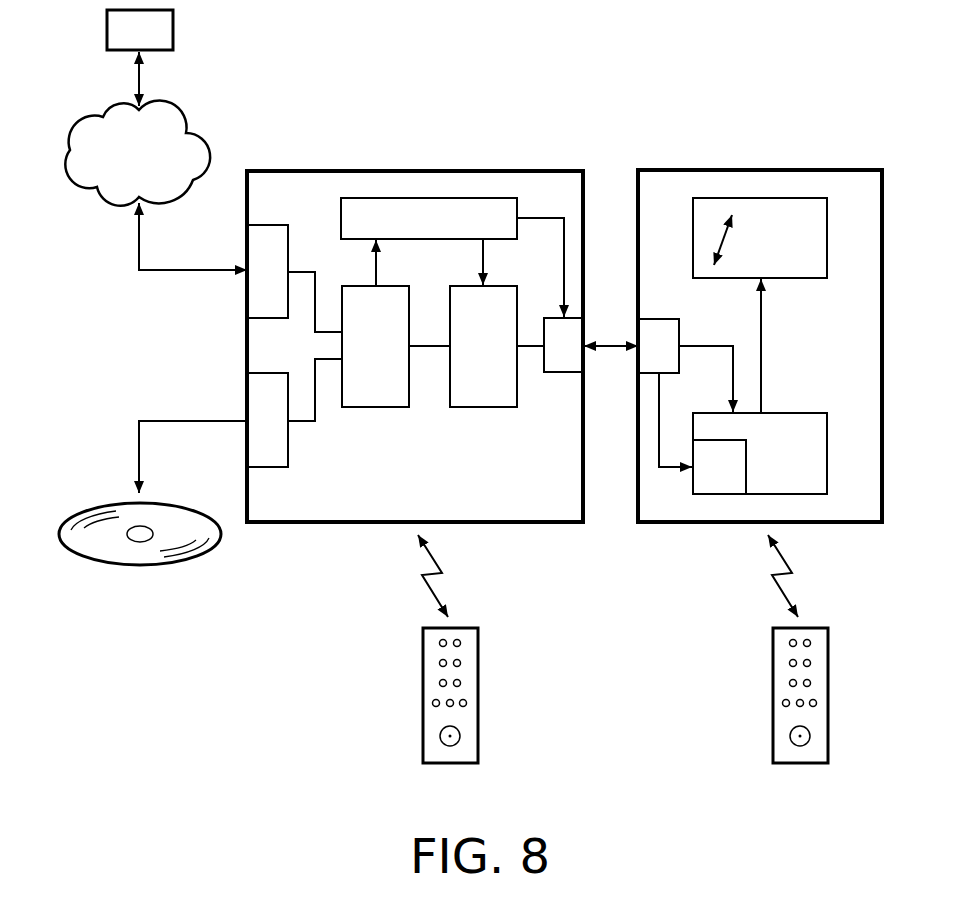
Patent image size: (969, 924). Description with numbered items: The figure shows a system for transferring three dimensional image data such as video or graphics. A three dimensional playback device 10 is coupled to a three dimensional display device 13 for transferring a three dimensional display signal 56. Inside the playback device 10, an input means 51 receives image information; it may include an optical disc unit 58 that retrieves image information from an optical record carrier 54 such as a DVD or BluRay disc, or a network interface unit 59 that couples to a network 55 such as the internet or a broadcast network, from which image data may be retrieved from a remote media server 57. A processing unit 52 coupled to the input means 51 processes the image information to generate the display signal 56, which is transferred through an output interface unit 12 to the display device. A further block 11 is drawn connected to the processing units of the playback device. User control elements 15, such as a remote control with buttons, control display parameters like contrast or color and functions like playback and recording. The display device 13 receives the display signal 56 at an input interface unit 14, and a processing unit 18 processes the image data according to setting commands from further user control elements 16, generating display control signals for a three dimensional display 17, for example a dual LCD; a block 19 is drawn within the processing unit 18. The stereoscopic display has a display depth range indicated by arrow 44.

The 3D playback device 10 is at (418, 170).
The controller 11 is at (413, 232).
The output interface unit 12 is at (547, 358).
The 3D display device 13 is at (753, 170).
The input interface unit 14 is at (643, 360).
The user control elements 15 is at (423, 705).
The further user control elements 16 is at (773, 705).
The 3D display 17 is at (744, 247).
The processing unit 18 is at (771, 452).
The memory 19 is at (703, 479).
The display depth range 44 is at (722, 236).
The input means 51 is at (360, 358).
The processing unit 52 is at (467, 358).
The optical record carrier 54 is at (155, 565).
The network 55 is at (123, 171).
The 3D display signal 56 is at (615, 350).
The remote media server 57 is at (124, 44).
The optical disc unit 58 is at (252, 434).
The network interface unit 59 is at (252, 286).